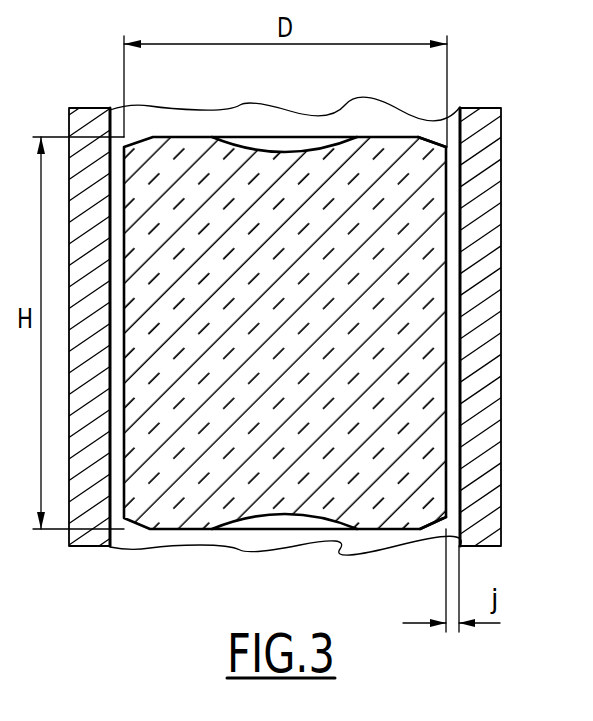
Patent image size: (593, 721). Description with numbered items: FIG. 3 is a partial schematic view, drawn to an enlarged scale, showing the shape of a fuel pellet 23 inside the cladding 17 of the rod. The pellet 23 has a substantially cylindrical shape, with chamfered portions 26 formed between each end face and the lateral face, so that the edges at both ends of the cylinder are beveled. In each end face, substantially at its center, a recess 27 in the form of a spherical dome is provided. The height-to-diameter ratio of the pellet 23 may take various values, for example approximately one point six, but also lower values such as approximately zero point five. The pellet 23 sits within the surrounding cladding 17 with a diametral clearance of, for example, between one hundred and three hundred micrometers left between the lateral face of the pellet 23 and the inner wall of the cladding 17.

The cladding 17 is at (480, 232).
The pellet 23 is at (436, 360).
The chamfered portions 26 is at (431, 138).
The recess 27 is at (287, 149).